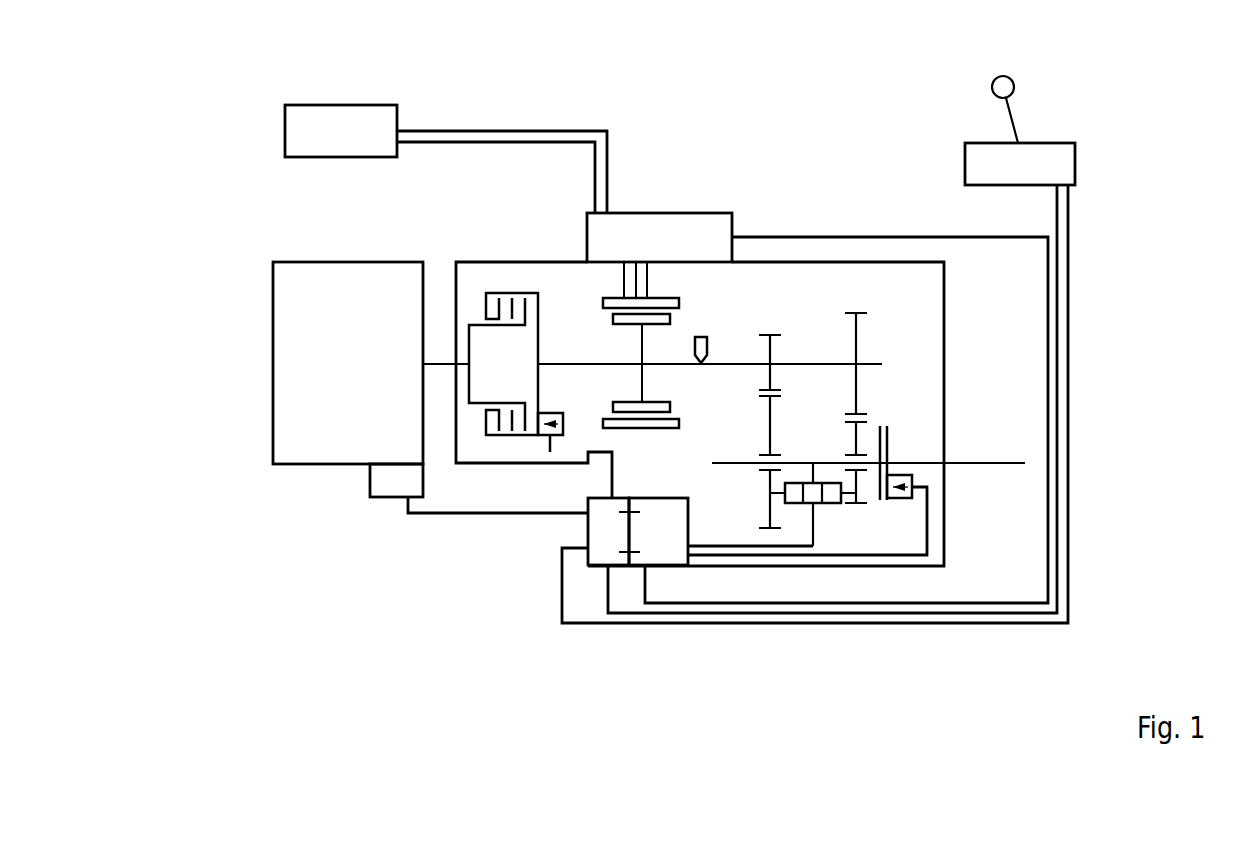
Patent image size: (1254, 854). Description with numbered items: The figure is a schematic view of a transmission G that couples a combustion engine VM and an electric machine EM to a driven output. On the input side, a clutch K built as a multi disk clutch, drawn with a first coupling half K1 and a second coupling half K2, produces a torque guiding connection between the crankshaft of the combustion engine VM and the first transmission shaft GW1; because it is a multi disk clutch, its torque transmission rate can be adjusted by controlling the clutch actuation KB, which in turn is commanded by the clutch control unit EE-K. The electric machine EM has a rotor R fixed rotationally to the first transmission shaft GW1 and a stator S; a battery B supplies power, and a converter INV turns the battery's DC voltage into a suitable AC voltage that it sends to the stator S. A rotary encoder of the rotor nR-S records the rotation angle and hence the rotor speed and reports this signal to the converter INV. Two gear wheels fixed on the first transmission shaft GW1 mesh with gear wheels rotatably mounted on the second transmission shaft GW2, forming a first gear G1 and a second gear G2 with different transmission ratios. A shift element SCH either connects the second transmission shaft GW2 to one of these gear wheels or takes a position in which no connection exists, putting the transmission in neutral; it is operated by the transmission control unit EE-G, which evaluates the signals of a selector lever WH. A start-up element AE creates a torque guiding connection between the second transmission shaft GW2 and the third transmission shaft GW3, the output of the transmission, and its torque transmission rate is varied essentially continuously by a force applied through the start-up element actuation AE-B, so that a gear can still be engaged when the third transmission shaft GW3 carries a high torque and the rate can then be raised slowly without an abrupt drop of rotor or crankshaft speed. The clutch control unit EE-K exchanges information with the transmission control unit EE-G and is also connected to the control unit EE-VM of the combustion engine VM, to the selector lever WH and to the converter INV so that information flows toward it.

The battery B is at (283, 119).
The clutch K is at (360, 464).
The first coupling half K1 is at (517, 438).
The second coupling half K2 is at (471, 407).
The clutch actuation KB is at (548, 438).
The combustion engine VM is at (270, 364).
The control unit of the combustion engine EE-VM is at (362, 483).
The transmission G is at (472, 236).
The rotor R is at (604, 300).
The stator S is at (622, 318).
The converter INV is at (653, 210).
The rotary encoder of the rotor nR-S is at (705, 337).
The first transmission shaft GW1 is at (745, 363).
The second transmission shaft GW2 is at (740, 465).
The third transmission shaft GW3 is at (1003, 463).
The first gear G1 is at (786, 318).
The second gear G2 is at (861, 296).
The shift element SCH is at (830, 507).
The start-up element AE is at (900, 450).
The start-up element actuation AE-B is at (908, 500).
The electric machine EM is at (635, 367).
The clutch control unit EE-K is at (601, 569).
The transmission control unit EE-G is at (669, 569).
The selector lever WH is at (1013, 120).